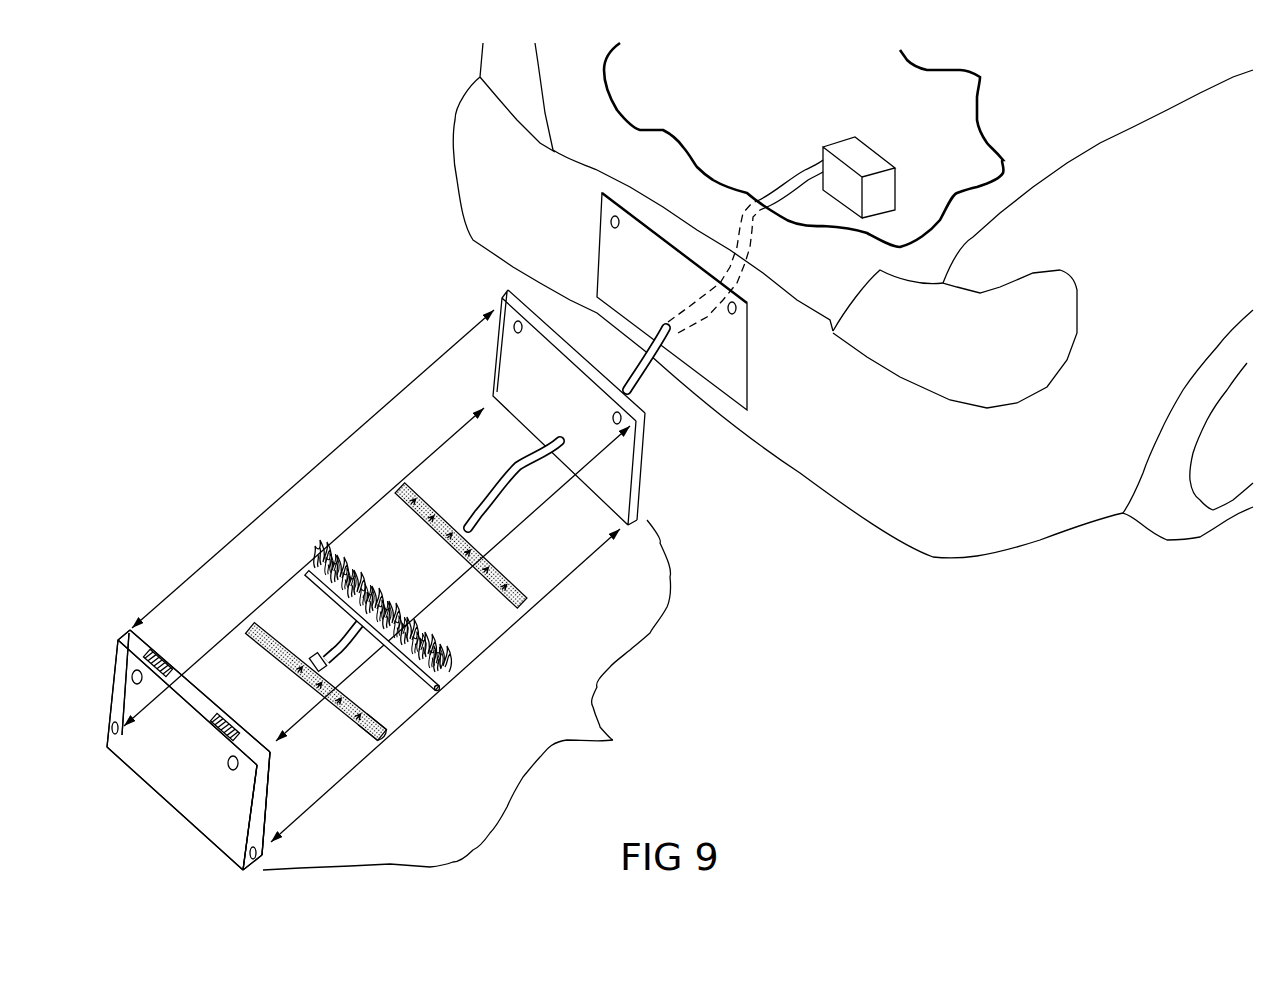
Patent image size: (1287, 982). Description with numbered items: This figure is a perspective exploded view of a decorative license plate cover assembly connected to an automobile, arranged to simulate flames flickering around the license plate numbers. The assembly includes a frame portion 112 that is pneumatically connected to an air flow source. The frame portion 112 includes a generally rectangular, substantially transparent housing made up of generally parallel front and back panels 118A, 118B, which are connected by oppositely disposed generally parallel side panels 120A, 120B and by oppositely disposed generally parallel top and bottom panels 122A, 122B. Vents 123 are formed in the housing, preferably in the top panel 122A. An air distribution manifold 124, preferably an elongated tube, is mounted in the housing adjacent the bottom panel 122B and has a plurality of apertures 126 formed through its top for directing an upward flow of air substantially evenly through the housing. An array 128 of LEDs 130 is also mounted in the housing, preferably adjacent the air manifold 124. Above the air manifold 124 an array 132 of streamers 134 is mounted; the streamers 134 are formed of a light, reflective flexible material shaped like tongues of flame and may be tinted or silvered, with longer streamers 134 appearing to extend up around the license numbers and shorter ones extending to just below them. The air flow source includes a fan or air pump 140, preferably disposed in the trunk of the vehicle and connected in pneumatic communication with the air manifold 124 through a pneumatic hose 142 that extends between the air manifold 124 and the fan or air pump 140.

The frame portion 112 is at (467, 695).
The front panel 118A is at (162, 750).
The back panel 118B is at (268, 777).
The side panel 120A is at (125, 628).
The side panel 120B is at (258, 793).
The top panel 122A is at (193, 693).
The bottom panel 122B is at (193, 827).
The vents 123 is at (377, 576).
The air distribution manifold 124 is at (386, 737).
The apertures 126 is at (262, 624).
The array of LEDs 128 is at (532, 598).
The LEDs 130 is at (436, 502).
The array of streamers 132 is at (475, 638).
The streamers 134 is at (360, 538).
The fan or air pump 140 is at (880, 153).
The pneumatic hose 142 is at (793, 175).